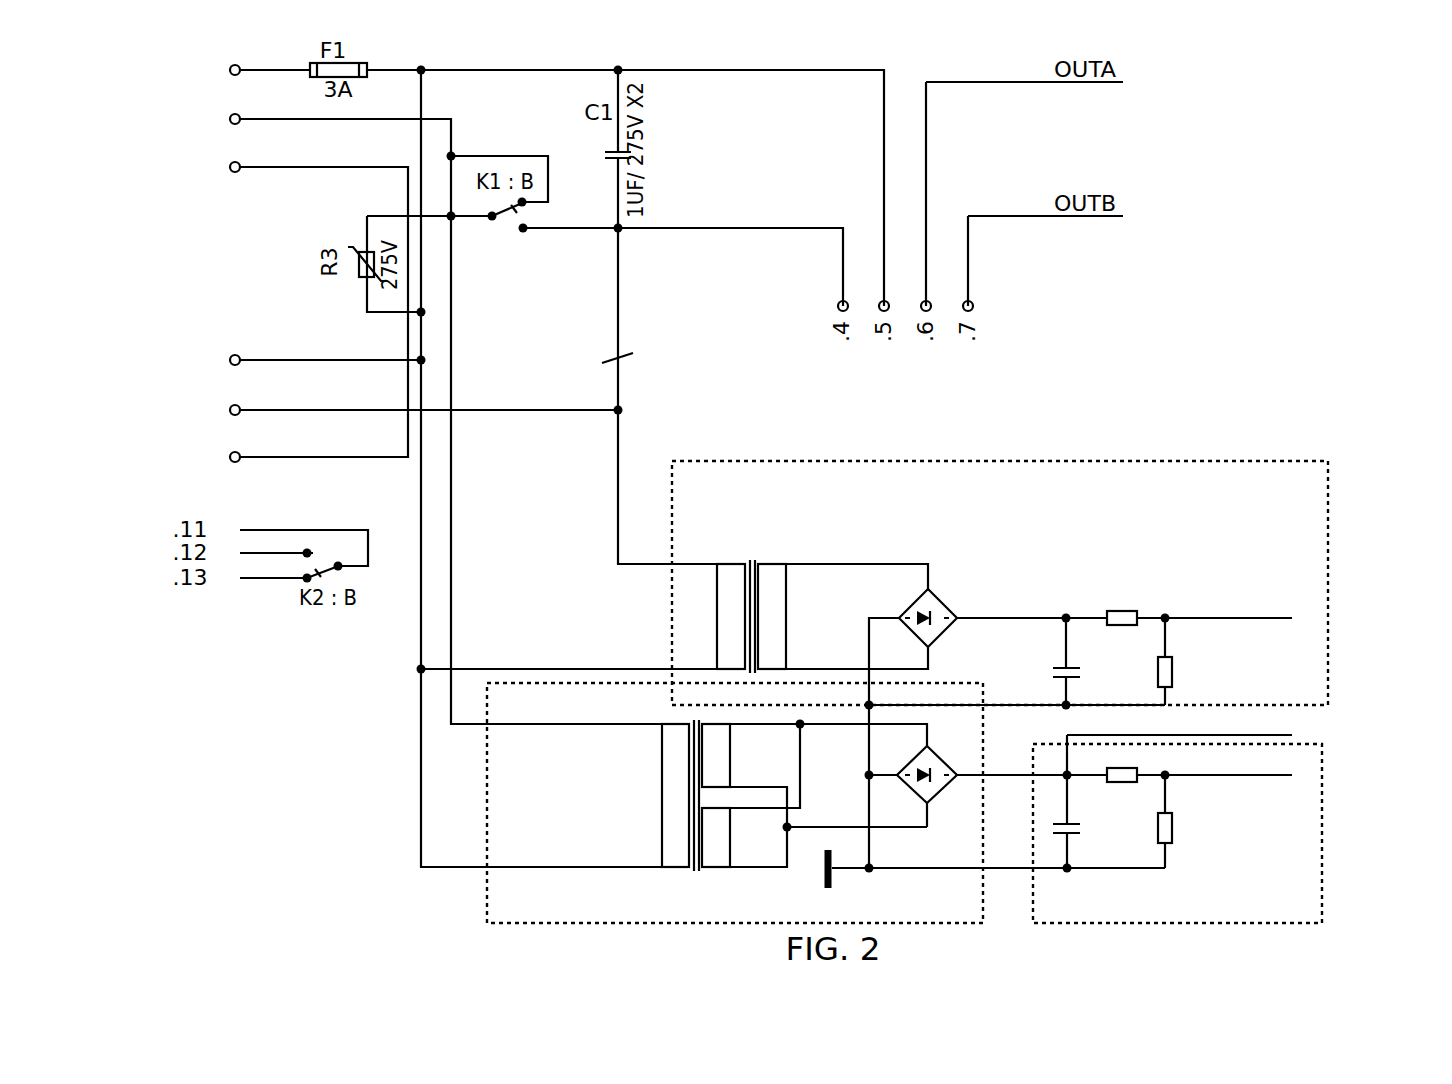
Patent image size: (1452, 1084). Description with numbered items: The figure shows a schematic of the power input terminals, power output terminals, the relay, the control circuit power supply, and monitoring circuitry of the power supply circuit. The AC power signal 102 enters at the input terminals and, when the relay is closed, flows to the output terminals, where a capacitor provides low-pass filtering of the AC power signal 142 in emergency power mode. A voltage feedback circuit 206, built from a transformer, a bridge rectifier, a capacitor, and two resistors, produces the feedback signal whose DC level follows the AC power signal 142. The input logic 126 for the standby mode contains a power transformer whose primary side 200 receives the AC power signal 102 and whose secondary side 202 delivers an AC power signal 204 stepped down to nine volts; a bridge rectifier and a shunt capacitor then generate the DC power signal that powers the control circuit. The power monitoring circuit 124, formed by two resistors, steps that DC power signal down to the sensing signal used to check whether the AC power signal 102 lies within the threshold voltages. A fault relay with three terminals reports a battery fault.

The AC power signal 102 is at (280, 108).
The AC power signal 142 is at (270, 347).
The voltage feedback circuit 206 is at (1277, 460).
The input logic 126 is at (845, 803).
The primary side 200 is at (670, 820).
The secondary side 202 is at (722, 845).
The AC power signal 204 is at (850, 733).
The power monitoring circuit 124 is at (1322, 820).